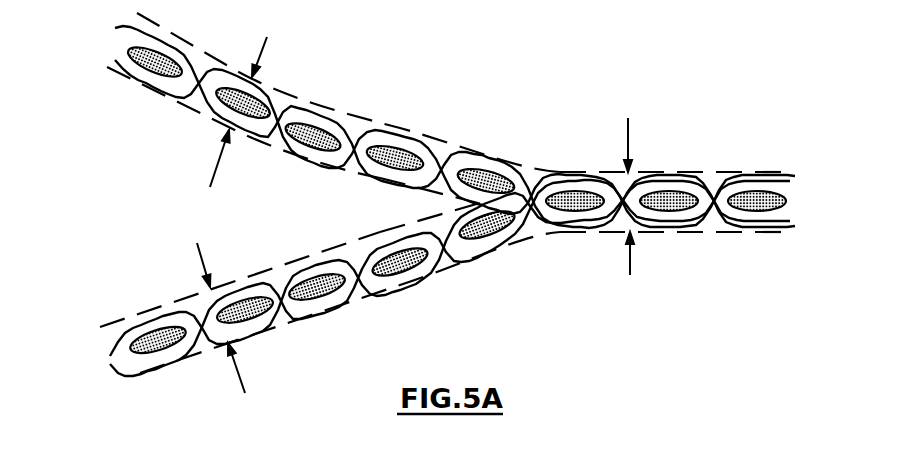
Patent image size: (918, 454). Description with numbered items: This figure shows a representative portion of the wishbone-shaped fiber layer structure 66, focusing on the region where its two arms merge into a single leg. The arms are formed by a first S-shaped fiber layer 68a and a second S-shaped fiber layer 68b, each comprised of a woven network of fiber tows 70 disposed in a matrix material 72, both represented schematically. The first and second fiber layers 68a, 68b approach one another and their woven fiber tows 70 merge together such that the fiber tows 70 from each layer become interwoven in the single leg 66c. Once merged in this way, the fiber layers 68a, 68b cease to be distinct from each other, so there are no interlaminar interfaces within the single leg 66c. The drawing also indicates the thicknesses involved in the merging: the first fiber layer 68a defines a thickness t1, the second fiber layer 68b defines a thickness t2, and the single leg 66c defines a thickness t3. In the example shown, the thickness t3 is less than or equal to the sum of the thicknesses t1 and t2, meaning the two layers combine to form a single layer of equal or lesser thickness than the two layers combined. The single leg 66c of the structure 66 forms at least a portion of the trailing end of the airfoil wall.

The wishbone-shaped fiber layer structure 66 is at (447, 216).
The single leg 66c is at (690, 165).
The first S-shaped fiber layer 68a is at (268, 333).
The second S-shaped fiber layer 68b is at (313, 98).
The fiber tows 70 is at (418, 143).
The matrix material 72 is at (440, 230).
The thickness of first fiber layer t1 is at (200, 251).
The thickness of second fiber layer t2 is at (213, 172).
The thickness of single leg t3 is at (628, 128).